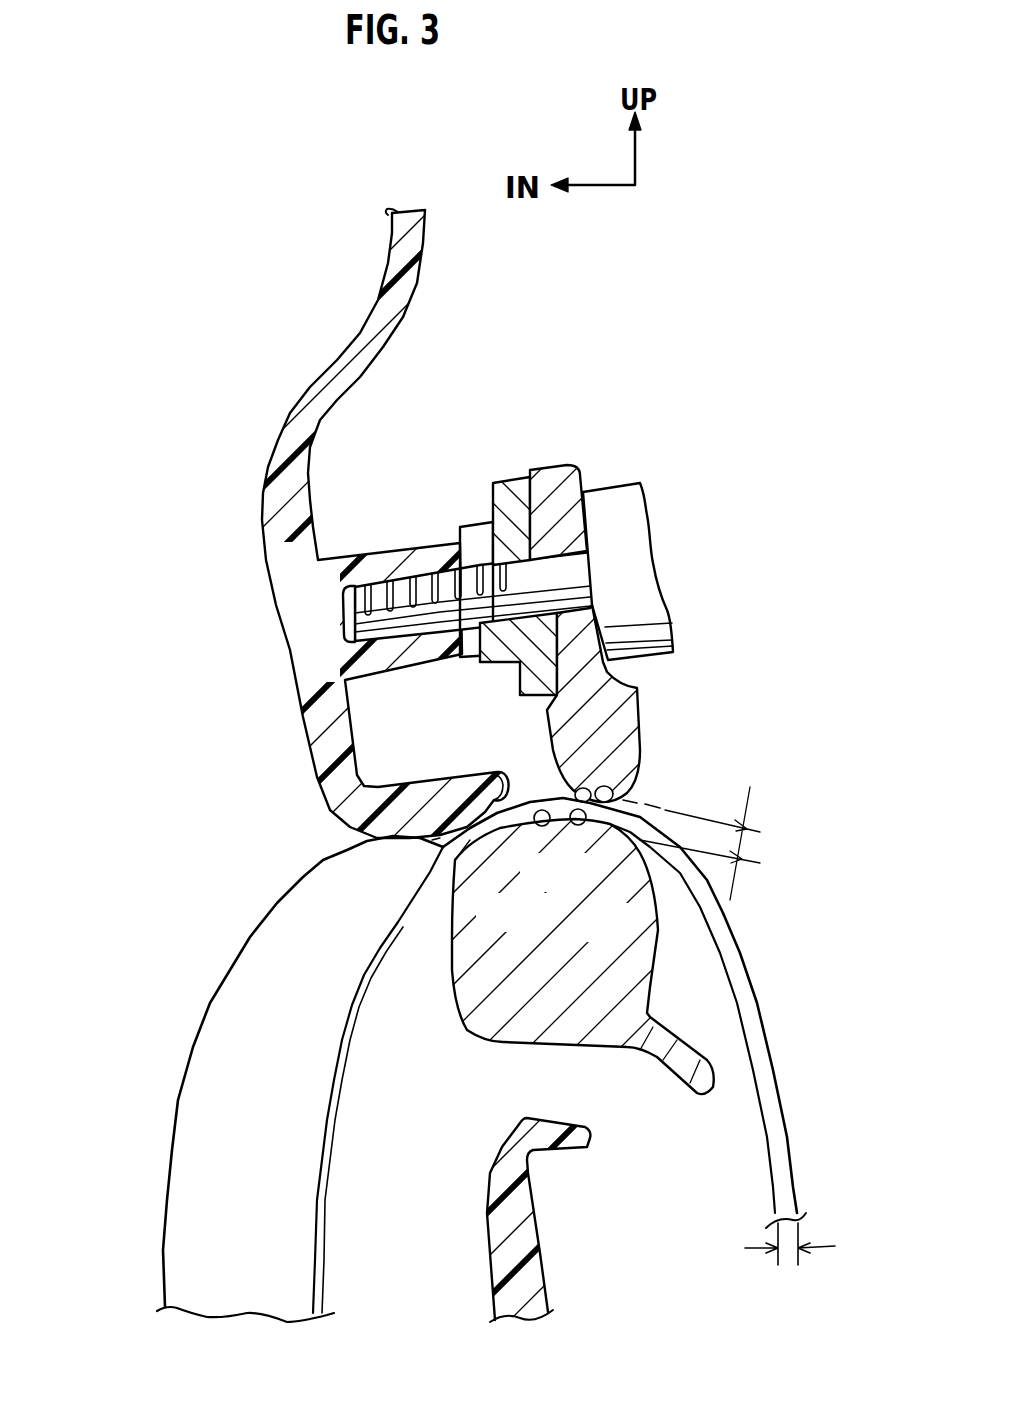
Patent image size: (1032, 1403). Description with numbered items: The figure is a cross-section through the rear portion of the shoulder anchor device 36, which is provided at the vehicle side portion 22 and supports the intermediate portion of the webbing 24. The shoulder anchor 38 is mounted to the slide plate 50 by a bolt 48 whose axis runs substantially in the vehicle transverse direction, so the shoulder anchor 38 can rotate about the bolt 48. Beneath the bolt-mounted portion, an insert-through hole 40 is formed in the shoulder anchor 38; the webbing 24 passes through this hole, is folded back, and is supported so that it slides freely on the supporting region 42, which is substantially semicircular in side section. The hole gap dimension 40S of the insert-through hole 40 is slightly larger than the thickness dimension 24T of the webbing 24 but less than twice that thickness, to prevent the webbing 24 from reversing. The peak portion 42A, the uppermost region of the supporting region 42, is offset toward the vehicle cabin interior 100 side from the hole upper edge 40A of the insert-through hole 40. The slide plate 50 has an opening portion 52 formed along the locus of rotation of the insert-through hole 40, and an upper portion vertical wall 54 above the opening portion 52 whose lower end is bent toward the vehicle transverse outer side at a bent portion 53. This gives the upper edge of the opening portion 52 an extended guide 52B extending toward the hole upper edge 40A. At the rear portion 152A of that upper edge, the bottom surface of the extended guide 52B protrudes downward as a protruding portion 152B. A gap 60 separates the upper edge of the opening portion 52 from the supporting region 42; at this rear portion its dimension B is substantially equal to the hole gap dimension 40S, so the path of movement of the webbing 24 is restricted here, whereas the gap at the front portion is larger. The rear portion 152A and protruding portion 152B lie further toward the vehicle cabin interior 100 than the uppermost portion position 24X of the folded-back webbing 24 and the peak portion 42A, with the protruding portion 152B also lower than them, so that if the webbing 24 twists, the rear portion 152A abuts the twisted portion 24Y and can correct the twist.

The vehicle cabin interior 100 is at (131, 672).
The vehicle side portion 22 is at (183, 358).
The shoulder anchor device 36 is at (220, 412).
The slide plate 50 is at (259, 481).
The upper portion vertical wall 54 is at (268, 564).
The bent portion 53 is at (365, 841).
The gap 60 is at (497, 771).
The bolt 48 is at (462, 525).
The shoulder anchor 38 is at (590, 466).
The insert-through hole 40 is at (640, 702).
The hole upper edge 40A is at (613, 788).
The hole gap dimension 40S is at (757, 833).
The webbing 24 is at (786, 1058).
The uppermost portion position 24X is at (562, 800).
The twisted portion 24Y is at (316, 866).
The thickness dimension 24T is at (790, 1255).
The rear portion 152A is at (342, 843).
The protruding portion 152B is at (425, 862).
The gap dimension B is at (438, 852).
The extended guide 52B is at (474, 878).
The supporting region 42 is at (586, 824).
The peak portion 42A is at (566, 832).
The opening portion 52 is at (497, 1127).